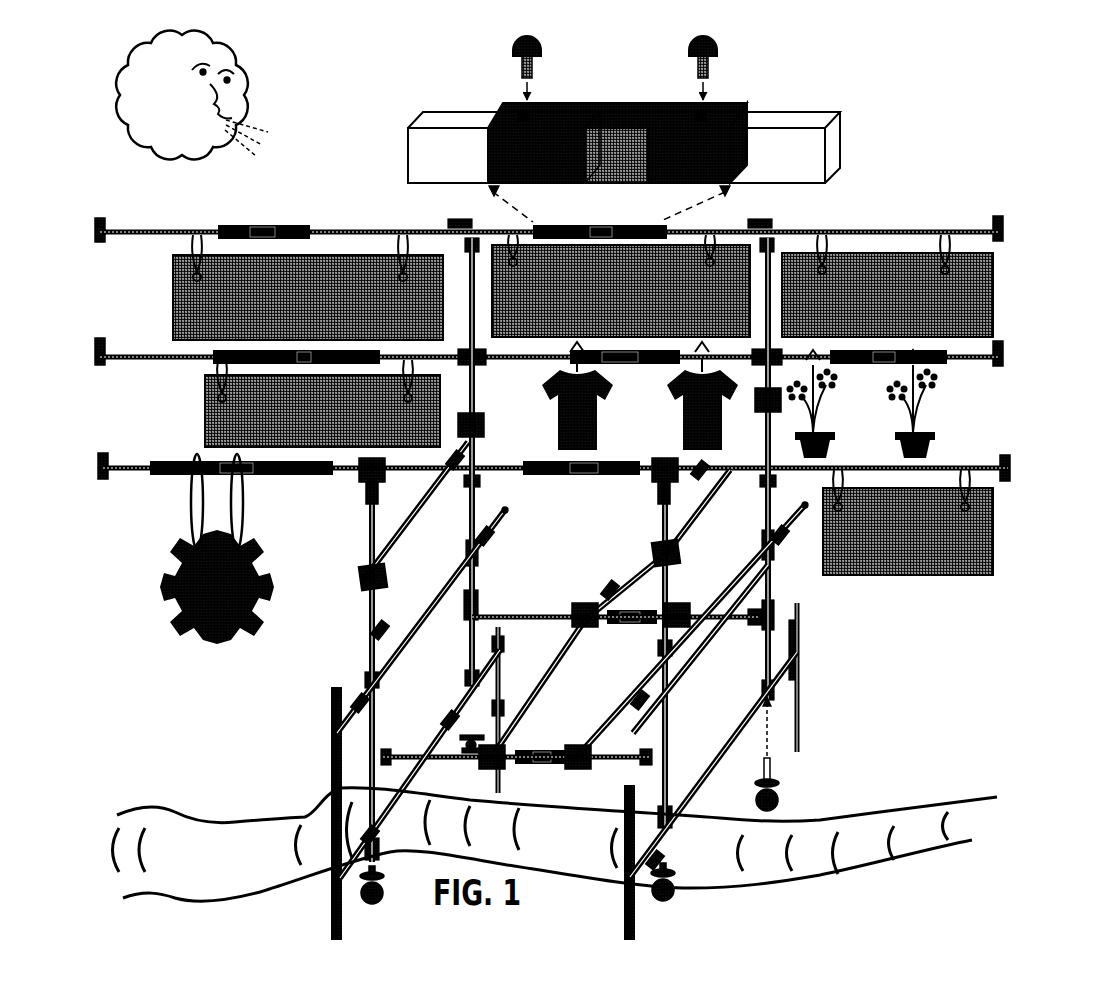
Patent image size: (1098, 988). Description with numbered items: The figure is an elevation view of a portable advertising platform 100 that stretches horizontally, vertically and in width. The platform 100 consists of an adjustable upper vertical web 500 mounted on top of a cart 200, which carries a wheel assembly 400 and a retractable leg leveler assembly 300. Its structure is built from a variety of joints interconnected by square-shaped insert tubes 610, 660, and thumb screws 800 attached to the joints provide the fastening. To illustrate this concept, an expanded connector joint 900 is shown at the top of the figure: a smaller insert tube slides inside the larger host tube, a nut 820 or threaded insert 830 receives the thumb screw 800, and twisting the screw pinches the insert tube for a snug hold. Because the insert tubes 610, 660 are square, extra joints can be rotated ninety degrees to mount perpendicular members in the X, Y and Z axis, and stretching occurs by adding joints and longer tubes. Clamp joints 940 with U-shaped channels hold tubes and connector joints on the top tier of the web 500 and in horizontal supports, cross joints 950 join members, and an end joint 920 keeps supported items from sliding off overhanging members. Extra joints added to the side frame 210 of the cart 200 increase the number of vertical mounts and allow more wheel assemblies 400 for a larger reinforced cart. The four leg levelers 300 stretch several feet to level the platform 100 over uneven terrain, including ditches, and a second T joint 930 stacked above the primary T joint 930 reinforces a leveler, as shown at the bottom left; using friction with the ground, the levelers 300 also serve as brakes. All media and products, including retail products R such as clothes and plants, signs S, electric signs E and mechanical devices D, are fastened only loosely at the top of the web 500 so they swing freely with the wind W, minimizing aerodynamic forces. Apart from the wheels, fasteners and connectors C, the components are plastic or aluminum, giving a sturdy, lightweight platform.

The advertising platform 100 is at (350, 103).
The wind W is at (238, 68).
The end joint 920 is at (100, 216).
The connectors C is at (195, 222).
The connector joint 900 is at (595, 112).
The insert tube 610 is at (350, 218).
The insert tube 660 is at (540, 506).
The T joint 930 is at (455, 220).
The thumb screws 800 is at (542, 33).
The aluminum nut 820 is at (549, 411).
The threaded inserts 830 is at (549, 411).
The signs S is at (172, 312).
The upper vertical web 500 is at (271, 403).
The electric signs E is at (205, 420).
The cross joint 950 is at (478, 362).
The retail products R is at (605, 418).
The mechanical devices D is at (162, 577).
The clamp joint 940 is at (360, 578).
The cart 200 is at (805, 585).
The leg leveler assembly 300 is at (322, 738).
The side frame 210 is at (762, 650).
The wheel assembly 400 is at (790, 795).